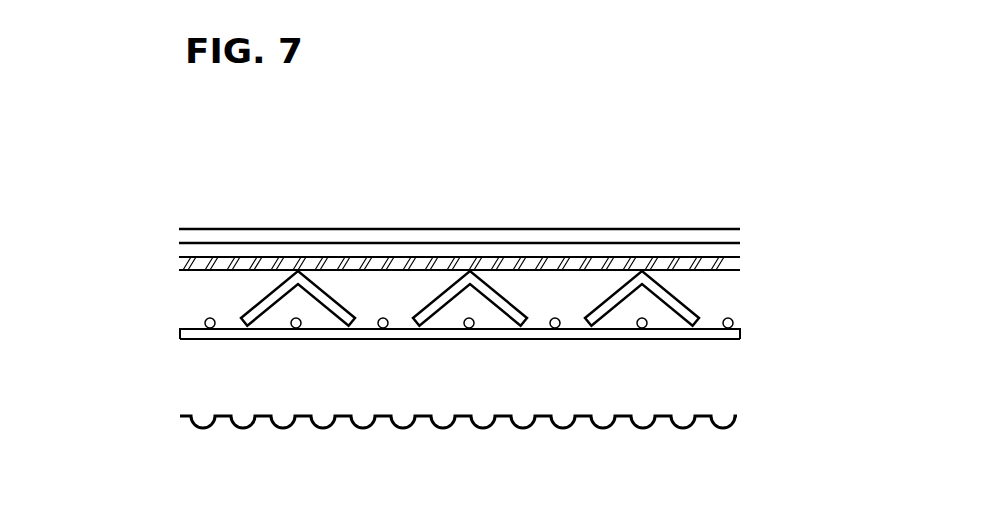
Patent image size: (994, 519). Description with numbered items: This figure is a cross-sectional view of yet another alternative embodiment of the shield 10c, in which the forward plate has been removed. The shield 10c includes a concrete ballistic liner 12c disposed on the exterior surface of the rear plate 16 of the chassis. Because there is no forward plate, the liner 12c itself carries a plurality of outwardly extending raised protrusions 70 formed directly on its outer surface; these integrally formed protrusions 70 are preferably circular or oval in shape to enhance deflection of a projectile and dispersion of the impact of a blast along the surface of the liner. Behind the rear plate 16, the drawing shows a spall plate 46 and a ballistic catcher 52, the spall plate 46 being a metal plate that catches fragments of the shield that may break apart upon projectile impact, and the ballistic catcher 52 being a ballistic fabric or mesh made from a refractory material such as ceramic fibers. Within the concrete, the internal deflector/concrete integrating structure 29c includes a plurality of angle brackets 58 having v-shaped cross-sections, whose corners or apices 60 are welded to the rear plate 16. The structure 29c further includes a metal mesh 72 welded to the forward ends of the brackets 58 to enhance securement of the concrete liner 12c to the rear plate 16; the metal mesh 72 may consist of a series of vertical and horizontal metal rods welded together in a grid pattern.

The shield 10c is at (130, 220).
The concrete ballistic liner 12c is at (227, 353).
The rear plate 16 is at (520, 257).
The internal deflector/concrete integrating structure 29c is at (673, 278).
The spall plate 46 is at (340, 229).
The ballistic catcher 52 is at (385, 247).
The angle brackets 58 is at (433, 300).
The apices 60 is at (298, 273).
The raised protrusions 70 is at (365, 432).
The metal mesh 72 is at (718, 343).